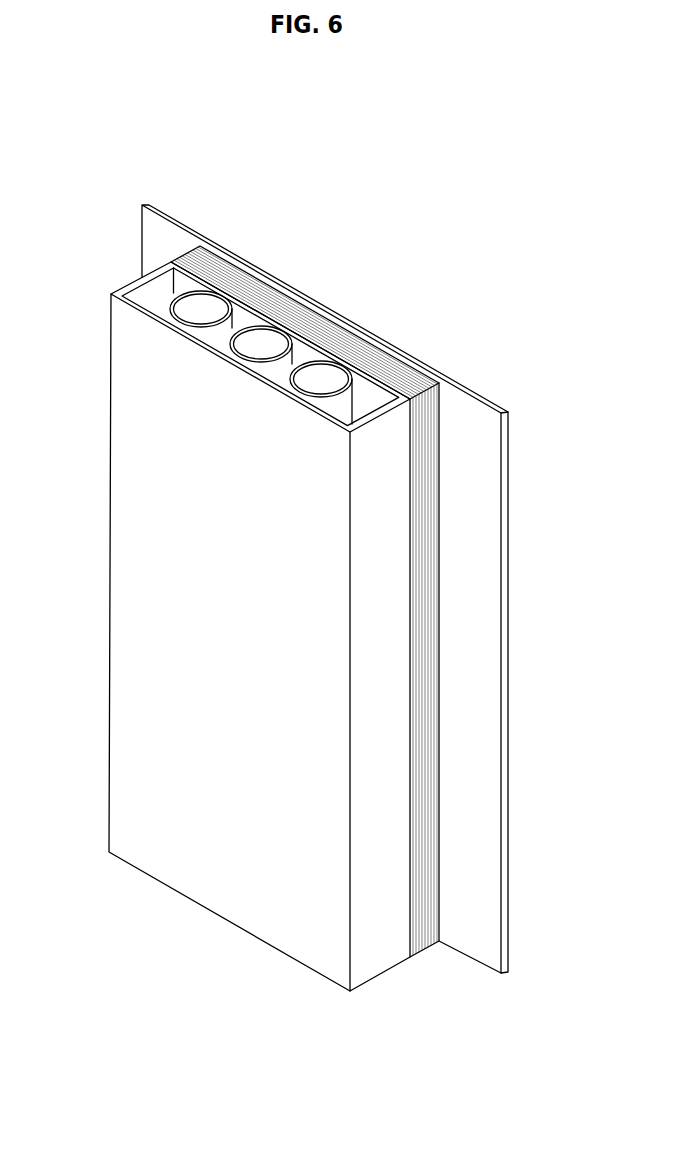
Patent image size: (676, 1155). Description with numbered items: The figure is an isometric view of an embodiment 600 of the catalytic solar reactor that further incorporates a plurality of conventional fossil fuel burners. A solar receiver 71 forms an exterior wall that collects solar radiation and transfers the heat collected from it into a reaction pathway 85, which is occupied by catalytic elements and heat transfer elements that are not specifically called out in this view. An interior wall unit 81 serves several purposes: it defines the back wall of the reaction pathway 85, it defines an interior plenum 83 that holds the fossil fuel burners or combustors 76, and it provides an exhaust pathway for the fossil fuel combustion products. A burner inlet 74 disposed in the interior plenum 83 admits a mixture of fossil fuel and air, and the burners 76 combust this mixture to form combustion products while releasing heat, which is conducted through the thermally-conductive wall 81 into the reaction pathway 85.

The embodiment 600 is at (113, 185).
The solar receiver 71 is at (509, 715).
The burner inlet 74 is at (263, 343).
The burners 76 is at (198, 307).
The interior wall unit 81 is at (125, 528).
The interior plenum 83 is at (148, 295).
The reaction pathway 85 is at (424, 538).